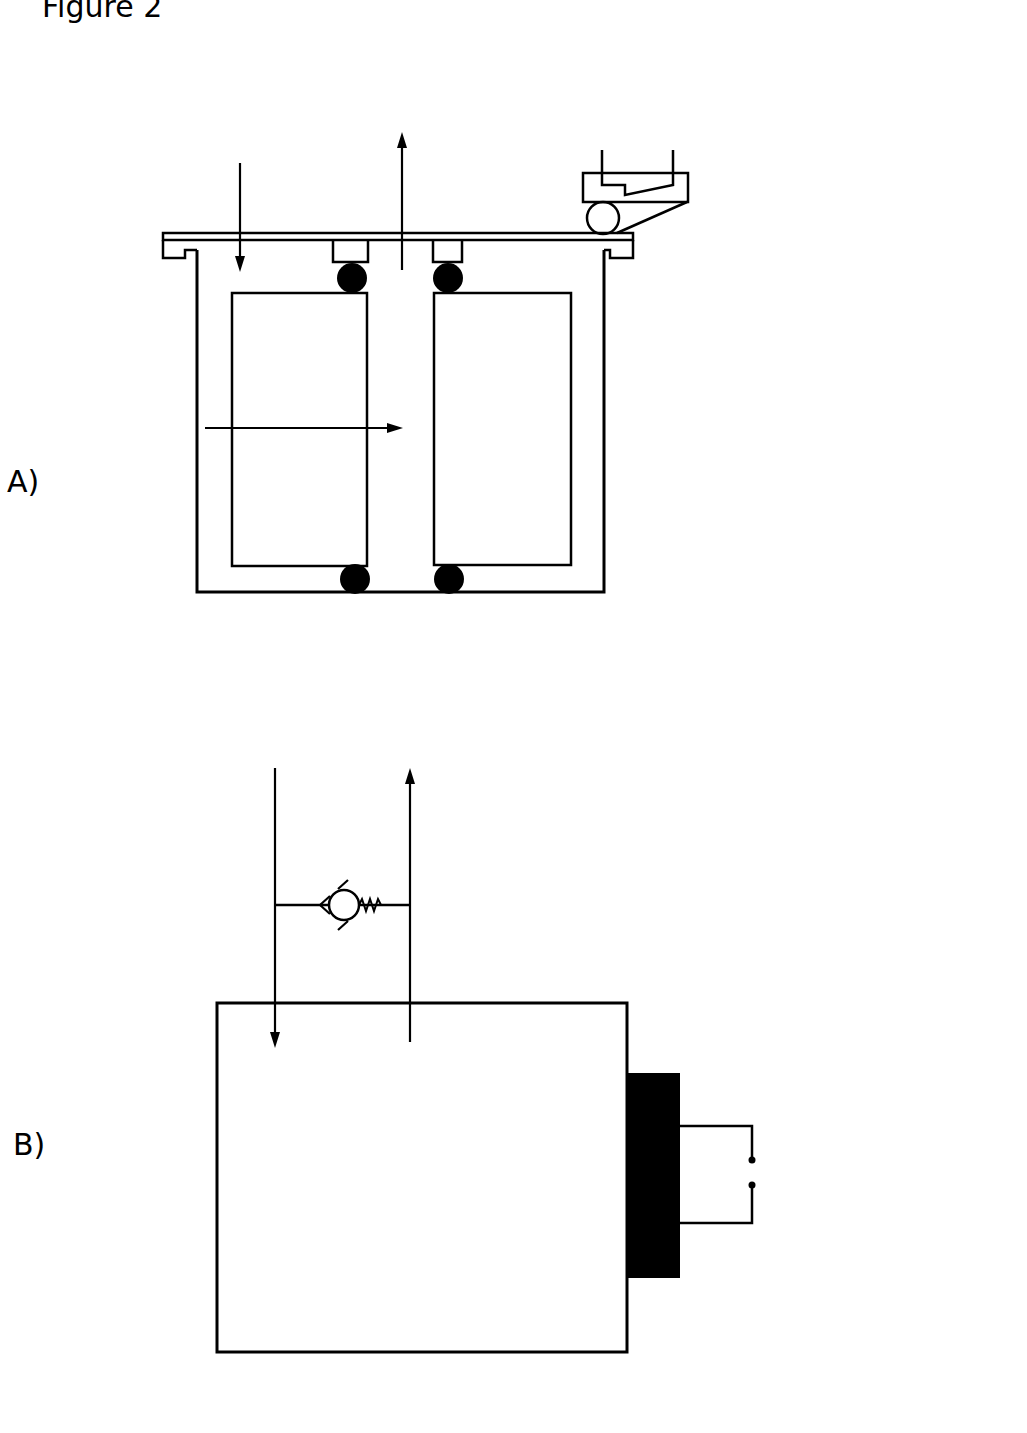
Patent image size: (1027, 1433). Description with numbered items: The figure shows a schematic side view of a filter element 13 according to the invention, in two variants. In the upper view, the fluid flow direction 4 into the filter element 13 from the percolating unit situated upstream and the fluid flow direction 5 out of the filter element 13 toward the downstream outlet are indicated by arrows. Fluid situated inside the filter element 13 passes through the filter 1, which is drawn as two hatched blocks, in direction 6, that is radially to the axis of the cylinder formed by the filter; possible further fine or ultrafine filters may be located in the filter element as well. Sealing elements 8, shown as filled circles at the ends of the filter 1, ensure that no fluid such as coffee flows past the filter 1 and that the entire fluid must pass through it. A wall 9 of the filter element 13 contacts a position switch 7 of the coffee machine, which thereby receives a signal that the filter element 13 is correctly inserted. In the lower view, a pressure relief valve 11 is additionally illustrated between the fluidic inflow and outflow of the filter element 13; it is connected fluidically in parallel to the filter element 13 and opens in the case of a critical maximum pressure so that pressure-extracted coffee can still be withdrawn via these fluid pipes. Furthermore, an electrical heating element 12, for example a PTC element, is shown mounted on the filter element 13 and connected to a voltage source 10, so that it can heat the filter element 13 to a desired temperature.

In FIG. 2A, the filter 1 is at (522, 404).
In FIG. 2A, the fluid flow direction from percolating unit 4 is at (240, 190).
In FIG. 2B, the fluid flow direction from percolating unit 4 is at (270, 884).
In FIG. 2A, the fluid flow direction to outlet 5 is at (400, 175).
In FIG. 2B, the fluid flow direction to outlet 5 is at (410, 881).
In FIG. 2A, the fluid flow direction through filter 6 is at (318, 427).
In FIG. 2A, the position switch 7 is at (695, 181).
In FIG. 2A, the sealing element 8 is at (338, 283).
In FIG. 2A, the wall of the filter element 9 is at (510, 233).
In FIG. 2B, the voltage source 10 is at (757, 1153).
In FIG. 2B, the pressure relief valve 11 is at (380, 897).
In FIG. 2B, the electrical heating element 12 is at (680, 1075).
In FIG. 2A, the filter element 13 is at (605, 512).
In FIG. 2B, the filter element 13 is at (628, 1325).